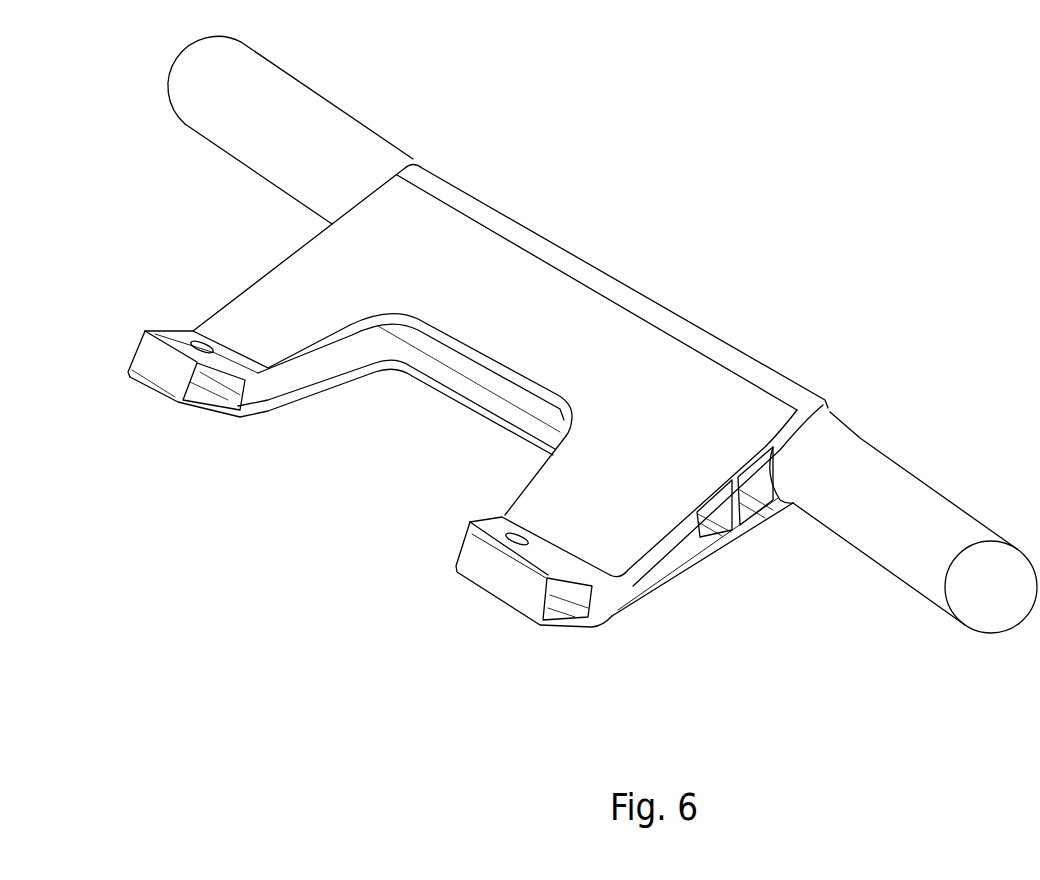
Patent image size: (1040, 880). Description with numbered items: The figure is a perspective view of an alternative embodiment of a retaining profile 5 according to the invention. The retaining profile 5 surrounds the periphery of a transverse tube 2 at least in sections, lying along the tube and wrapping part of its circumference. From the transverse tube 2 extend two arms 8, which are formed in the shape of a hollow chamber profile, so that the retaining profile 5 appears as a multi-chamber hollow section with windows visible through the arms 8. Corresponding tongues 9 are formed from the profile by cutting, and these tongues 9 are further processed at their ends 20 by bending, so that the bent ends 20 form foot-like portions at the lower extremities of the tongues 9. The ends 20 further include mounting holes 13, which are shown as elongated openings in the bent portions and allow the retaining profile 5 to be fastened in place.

The transverse tube 2 is at (920, 517).
The retaining profile 5 is at (650, 170).
The arms 8 is at (750, 450).
The tongues 9 is at (305, 325).
The mounting holes 13 is at (201, 352).
The ends 20 is at (132, 415).